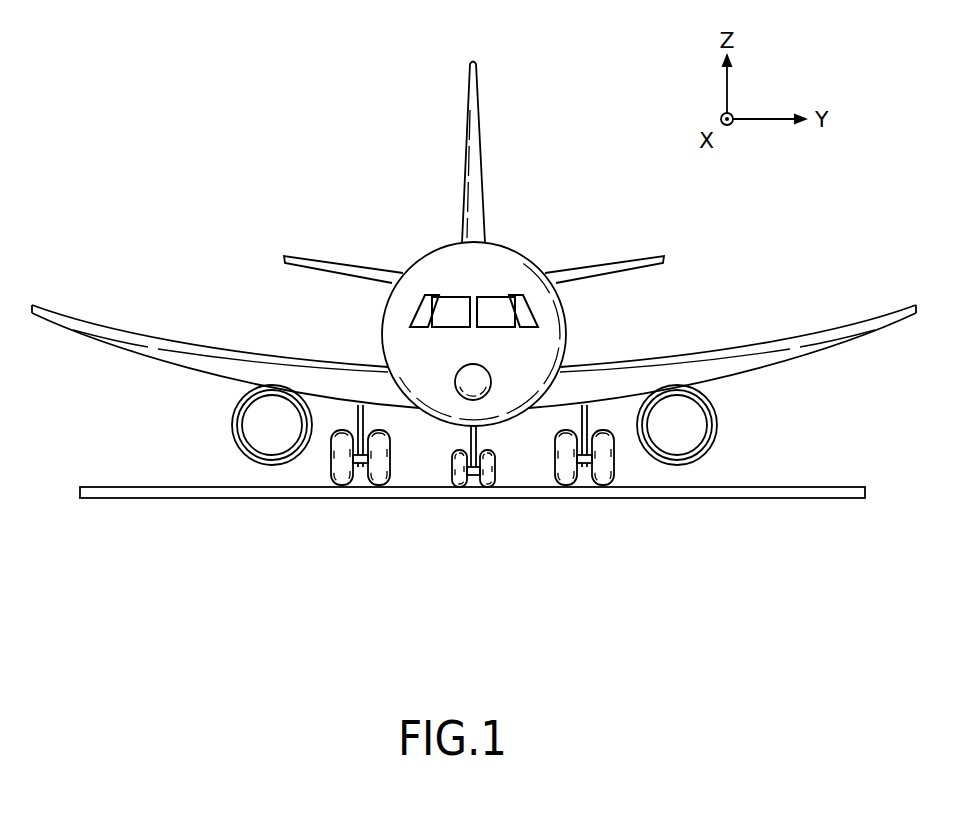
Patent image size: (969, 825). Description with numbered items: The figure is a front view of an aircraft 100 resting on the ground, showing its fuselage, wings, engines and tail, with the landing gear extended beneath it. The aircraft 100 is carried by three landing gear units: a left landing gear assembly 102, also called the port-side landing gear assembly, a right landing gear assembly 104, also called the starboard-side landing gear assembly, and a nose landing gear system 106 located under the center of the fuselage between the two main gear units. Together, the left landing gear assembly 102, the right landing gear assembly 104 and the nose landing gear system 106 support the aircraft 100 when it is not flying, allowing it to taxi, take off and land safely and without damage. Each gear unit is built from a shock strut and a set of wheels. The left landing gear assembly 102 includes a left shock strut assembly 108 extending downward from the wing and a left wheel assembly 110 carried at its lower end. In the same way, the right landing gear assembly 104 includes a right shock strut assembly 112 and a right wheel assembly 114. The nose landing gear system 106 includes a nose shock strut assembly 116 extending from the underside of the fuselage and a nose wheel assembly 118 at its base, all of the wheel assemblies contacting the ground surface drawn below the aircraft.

The aircraft 100 is at (474, 328).
The left landing gear assembly 102 is at (647, 475).
The right landing gear assembly 104 is at (307, 448).
The nose landing gear system 106 is at (435, 509).
The left shock strut assembly 108 is at (573, 512).
The left wheel assembly 110 is at (583, 463).
The right shock strut assembly 112 is at (352, 450).
The right wheel assembly 114 is at (362, 468).
The nose shock strut assembly 116 is at (478, 428).
The nose wheel assembly 118 is at (472, 477).